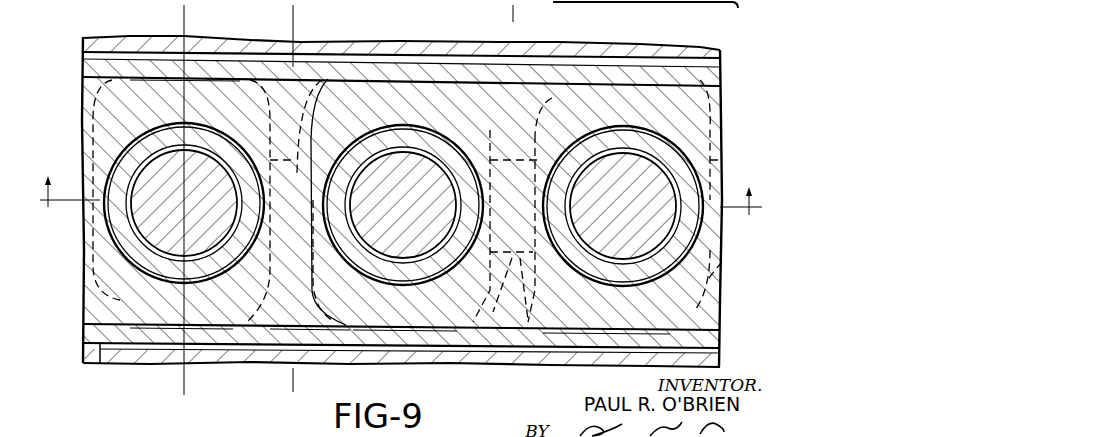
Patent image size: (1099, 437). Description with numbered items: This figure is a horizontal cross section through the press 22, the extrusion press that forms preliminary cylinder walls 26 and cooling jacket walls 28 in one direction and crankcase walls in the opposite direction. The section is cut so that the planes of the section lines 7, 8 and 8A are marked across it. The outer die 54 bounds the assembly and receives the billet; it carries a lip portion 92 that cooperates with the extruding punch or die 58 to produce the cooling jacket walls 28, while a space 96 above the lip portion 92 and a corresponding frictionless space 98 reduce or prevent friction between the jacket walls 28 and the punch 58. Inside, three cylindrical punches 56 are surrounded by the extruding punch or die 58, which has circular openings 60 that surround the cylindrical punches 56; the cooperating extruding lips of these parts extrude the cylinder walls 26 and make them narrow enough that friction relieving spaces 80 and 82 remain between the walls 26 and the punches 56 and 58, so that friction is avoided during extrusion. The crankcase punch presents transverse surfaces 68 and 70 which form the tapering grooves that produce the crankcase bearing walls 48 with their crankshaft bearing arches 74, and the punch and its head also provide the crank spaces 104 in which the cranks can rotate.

The press 22 is at (52, 290).
The outer die 54 is at (140, 44).
The lip portion 92 is at (700, 68).
The space 96 is at (670, 62).
The frictionless space 98 is at (83, 78).
The crank spaces 104 is at (82, 326).
The friction relieving space 82 is at (126, 145).
The circular openings 60 is at (131, 151).
The friction relieving space 80 is at (140, 268).
The preliminary cylinder walls 26 is at (127, 243).
The cylindrical punches 56 is at (143, 217).
The crankshaft bearing arches 74 is at (82, 167).
The cooling jacket walls 28 is at (587, 77).
The extruding punch or die 58 is at (553, 113).
The transverse surface 68 is at (538, 287).
The transverse surface 70 is at (490, 283).
The crankcase bearing walls 48 is at (263, 366).
The section line 8- 8 is at (170, 388).
The section line 8A- 8A is at (280, 13).
The section line 7- 7 is at (401, 184).